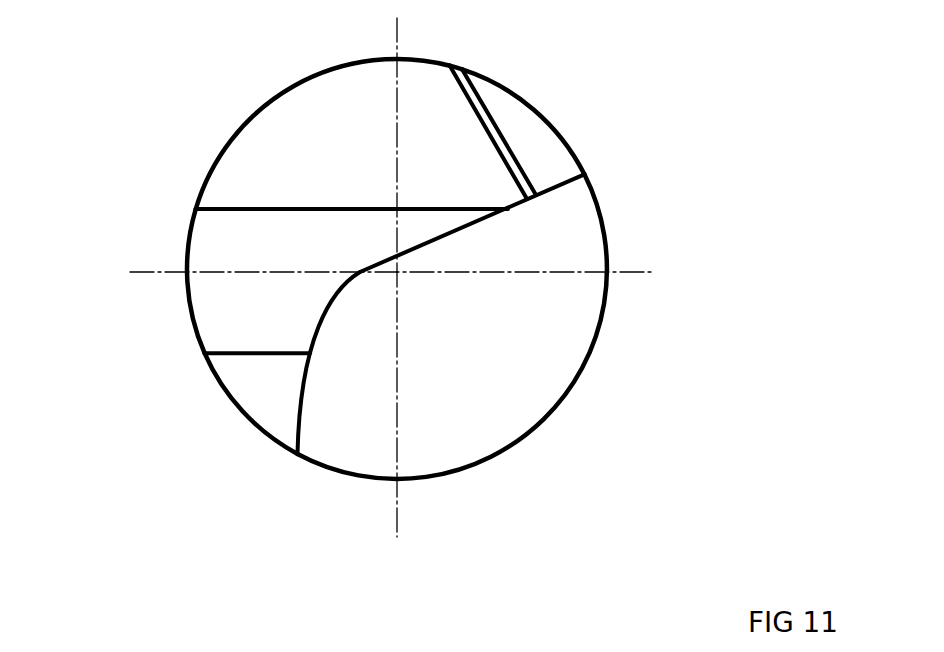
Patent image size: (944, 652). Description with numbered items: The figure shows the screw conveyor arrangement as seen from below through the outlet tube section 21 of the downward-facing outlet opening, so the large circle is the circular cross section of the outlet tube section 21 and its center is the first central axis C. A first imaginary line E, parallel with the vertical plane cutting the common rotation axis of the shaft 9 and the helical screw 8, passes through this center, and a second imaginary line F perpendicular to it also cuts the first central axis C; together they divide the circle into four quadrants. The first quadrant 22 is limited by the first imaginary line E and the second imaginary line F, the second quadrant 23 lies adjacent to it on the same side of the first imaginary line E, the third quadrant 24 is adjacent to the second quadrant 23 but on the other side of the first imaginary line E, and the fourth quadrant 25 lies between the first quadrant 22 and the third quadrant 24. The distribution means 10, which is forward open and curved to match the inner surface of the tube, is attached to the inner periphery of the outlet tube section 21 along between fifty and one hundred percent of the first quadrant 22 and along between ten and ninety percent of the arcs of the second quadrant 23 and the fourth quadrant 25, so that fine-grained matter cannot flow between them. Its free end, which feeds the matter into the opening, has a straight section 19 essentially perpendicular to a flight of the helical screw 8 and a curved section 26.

The helical screw 8 is at (482, 133).
The shaft 9 is at (250, 207).
The distribution means 10 is at (535, 350).
The straight section 19 is at (460, 223).
The outlet tube section 21 is at (177, 338).
The first quadrant 22 is at (490, 460).
The second quadrant 23 is at (243, 420).
The third quadrant 24 is at (260, 107).
The fourth quadrant 25 is at (520, 90).
The curved section 26 is at (323, 315).
The first central axis C is at (397, 273).
The first imaginary line E is at (638, 267).
The second imaginary line F is at (397, 505).